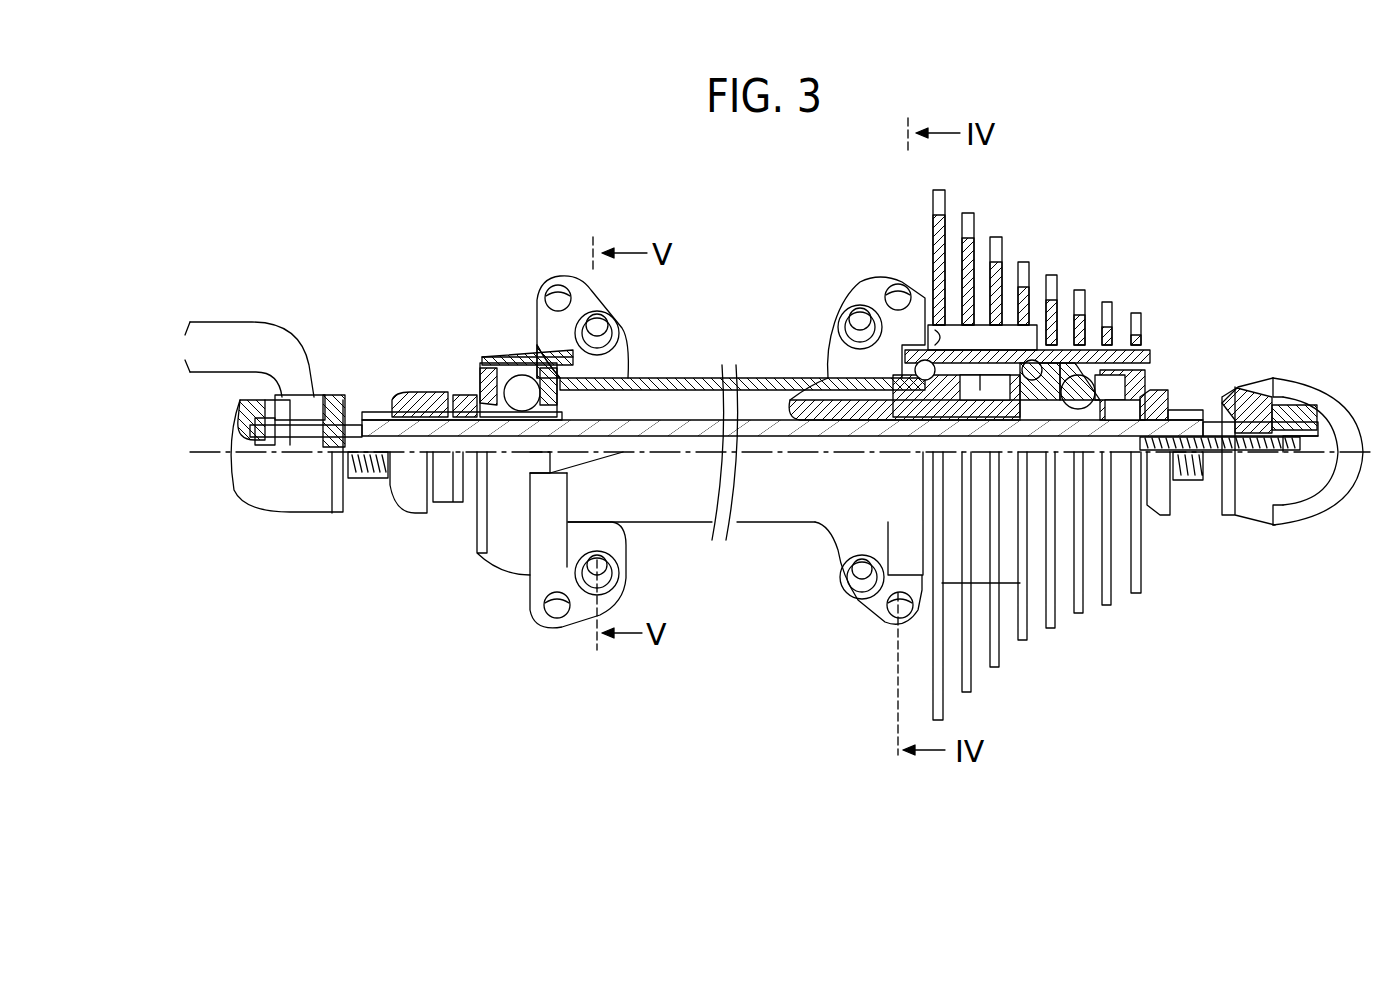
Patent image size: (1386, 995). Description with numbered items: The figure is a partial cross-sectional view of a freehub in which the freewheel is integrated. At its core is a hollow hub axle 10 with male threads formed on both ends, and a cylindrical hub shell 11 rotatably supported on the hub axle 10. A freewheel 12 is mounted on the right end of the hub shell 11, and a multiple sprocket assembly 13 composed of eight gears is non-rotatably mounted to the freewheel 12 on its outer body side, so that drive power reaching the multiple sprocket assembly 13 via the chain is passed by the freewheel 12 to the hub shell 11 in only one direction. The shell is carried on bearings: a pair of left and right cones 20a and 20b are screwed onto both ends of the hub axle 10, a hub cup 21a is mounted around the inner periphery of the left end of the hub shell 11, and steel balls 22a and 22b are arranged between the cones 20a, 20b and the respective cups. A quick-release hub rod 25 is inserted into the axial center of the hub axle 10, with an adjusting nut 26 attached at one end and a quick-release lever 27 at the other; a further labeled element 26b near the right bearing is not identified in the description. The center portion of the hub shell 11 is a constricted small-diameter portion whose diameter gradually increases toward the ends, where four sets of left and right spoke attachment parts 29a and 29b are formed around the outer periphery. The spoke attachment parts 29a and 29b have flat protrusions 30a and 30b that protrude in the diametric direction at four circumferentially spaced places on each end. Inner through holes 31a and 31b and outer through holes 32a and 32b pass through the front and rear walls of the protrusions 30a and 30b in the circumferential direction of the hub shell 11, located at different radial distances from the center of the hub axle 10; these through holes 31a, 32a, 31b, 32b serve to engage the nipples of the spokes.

The hub axle 10 is at (377, 415).
The hub shell 11 is at (505, 358).
The freewheel 12 is at (1150, 365).
The multiple sprocket assembly 13 is at (1050, 285).
The left cone 20a is at (427, 392).
The right cone 20b is at (1168, 397).
The hub cup 21a is at (537, 360).
The steel balls 22a is at (512, 388).
The steel balls 22b is at (1066, 350).
The quick-release hub rod 25 is at (464, 448).
The adjusting nut 26 is at (1247, 387).
The right bearing ball 26b is at (1077, 383).
The quick-release lever 27 is at (288, 498).
The left spoke attachment part 29a is at (612, 295).
The right spoke attachment part 29b is at (853, 285).
The left protrusion 30a is at (591, 290).
The right protrusion 30b is at (873, 292).
The inner through hole 31a is at (622, 327).
The inner through hole 31b is at (857, 317).
The outer through hole 32a is at (555, 290).
The outer through hole 32b is at (893, 287).